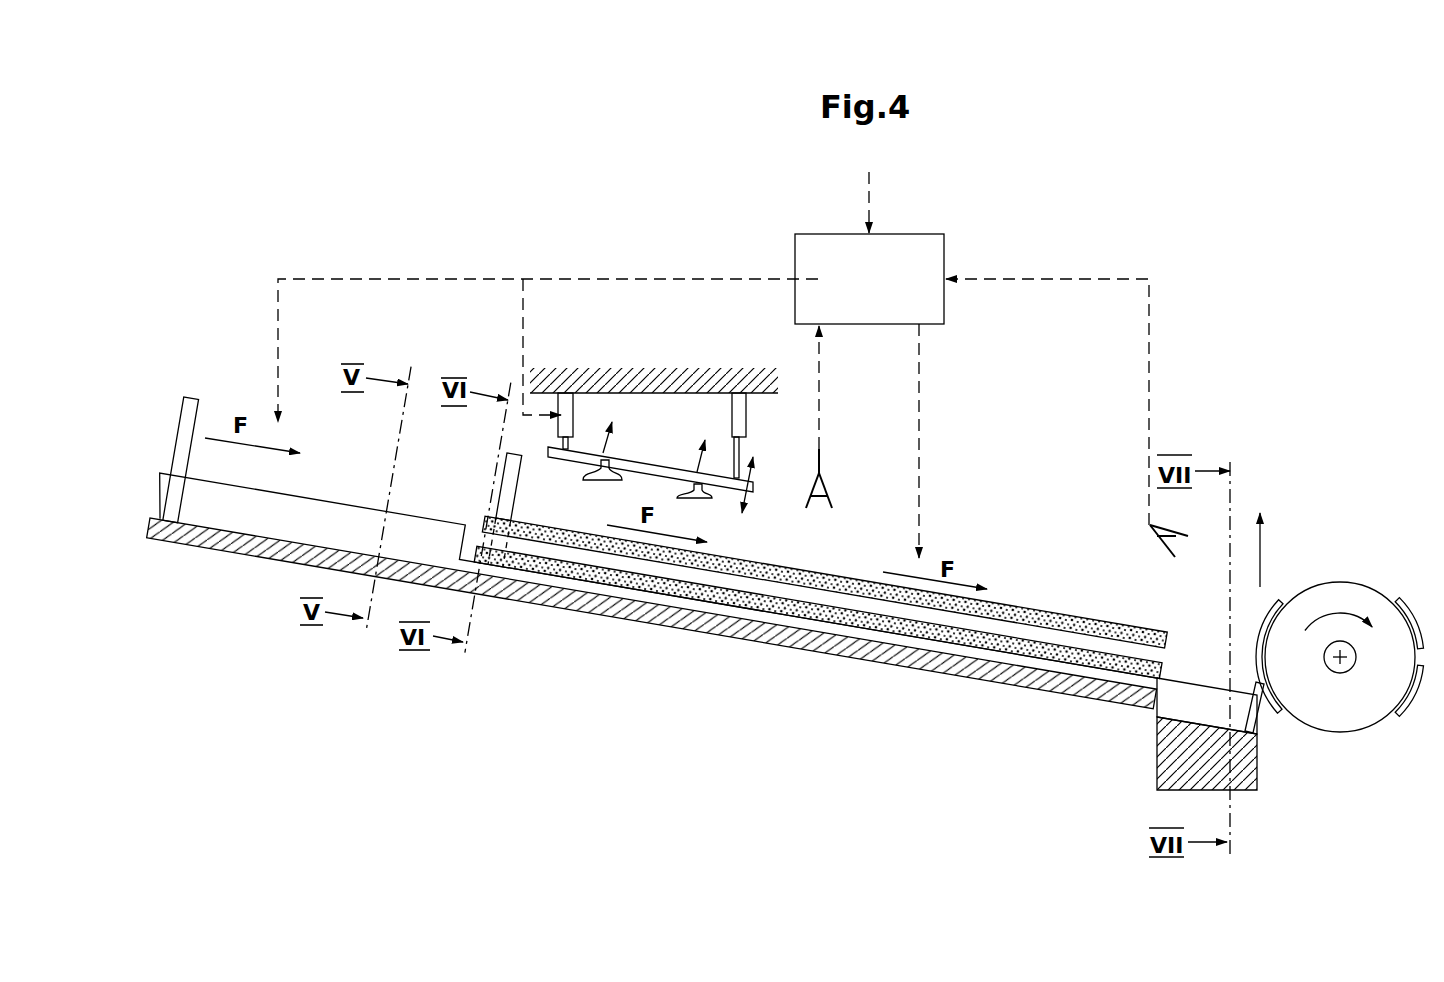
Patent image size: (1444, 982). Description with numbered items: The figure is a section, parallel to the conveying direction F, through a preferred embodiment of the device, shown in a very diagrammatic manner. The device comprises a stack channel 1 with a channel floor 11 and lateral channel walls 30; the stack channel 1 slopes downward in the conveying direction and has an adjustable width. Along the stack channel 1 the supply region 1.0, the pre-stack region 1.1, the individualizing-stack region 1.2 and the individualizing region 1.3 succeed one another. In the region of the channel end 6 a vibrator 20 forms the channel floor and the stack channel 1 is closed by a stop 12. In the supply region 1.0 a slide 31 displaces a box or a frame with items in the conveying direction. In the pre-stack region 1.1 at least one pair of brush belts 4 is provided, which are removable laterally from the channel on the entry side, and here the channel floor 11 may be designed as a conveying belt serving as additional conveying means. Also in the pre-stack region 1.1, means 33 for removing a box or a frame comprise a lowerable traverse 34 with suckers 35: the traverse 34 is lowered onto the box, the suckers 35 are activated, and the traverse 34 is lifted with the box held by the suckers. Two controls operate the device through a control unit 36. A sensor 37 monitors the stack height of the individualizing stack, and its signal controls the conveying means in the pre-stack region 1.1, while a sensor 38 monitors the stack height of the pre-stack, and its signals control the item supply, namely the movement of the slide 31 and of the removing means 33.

The stack channel 1 is at (197, 547).
The supply region 1.0 is at (265, 568).
The pre-stack region 1.1 is at (763, 693).
The individualizing-stack region 1.2 is at (1195, 678).
The individualizing region 1.3 is at (1257, 617).
The brush belts 4 is at (1002, 607).
The channel end 6 is at (1278, 726).
The channel floor 11 is at (524, 590).
The stop 12 is at (1258, 718).
The vibrator 20 is at (1253, 790).
The lateral channel walls 30 is at (397, 530).
The slide 31 is at (180, 414).
The means for removing a box or a frame 33 is at (658, 460).
The traverse 34 is at (572, 455).
The suckers 35 is at (697, 484).
The control unit 36 is at (885, 297).
The sensor 37 is at (1153, 530).
The sensor 38 is at (828, 483).